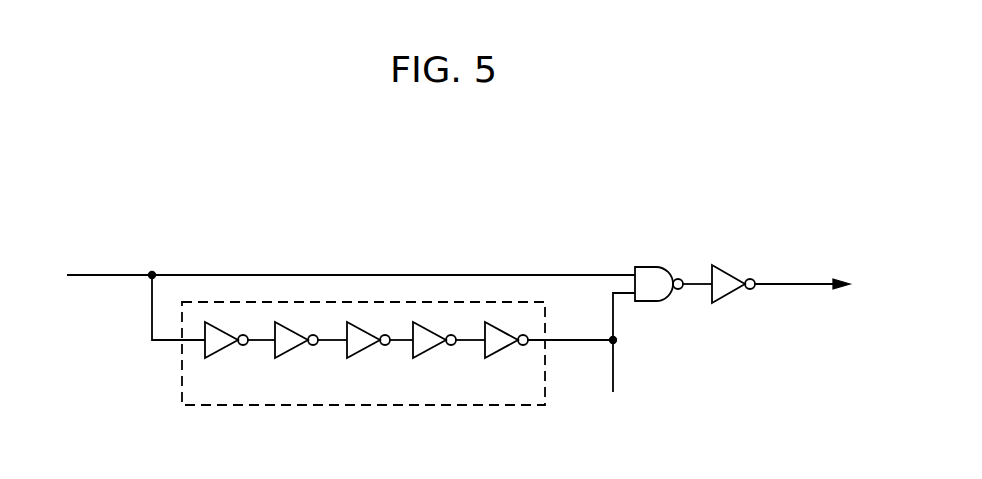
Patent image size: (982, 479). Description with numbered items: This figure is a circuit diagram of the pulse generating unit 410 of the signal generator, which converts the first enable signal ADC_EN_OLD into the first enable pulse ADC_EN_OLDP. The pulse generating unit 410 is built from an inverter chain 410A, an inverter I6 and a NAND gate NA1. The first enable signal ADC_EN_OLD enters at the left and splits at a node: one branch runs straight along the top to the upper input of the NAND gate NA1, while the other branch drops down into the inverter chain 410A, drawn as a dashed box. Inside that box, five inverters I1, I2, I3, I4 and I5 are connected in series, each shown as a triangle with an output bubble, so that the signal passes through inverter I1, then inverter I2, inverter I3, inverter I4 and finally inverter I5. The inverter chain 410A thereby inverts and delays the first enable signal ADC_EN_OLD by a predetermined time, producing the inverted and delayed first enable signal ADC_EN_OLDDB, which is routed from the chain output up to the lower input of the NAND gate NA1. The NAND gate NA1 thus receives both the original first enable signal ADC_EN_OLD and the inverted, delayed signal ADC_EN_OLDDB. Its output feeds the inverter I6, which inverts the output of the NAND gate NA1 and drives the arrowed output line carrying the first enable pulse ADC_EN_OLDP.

The pulse generating unit 410 is at (662, 207).
The inverter chain 410A is at (482, 405).
The inverter I1 is at (226, 355).
The inverter I2 is at (296, 355).
The inverter I3 is at (368, 355).
The inverter I4 is at (434, 355).
The inverter I5 is at (506, 355).
The inverter I6 is at (733, 299).
The NAND gate NA1 is at (659, 300).